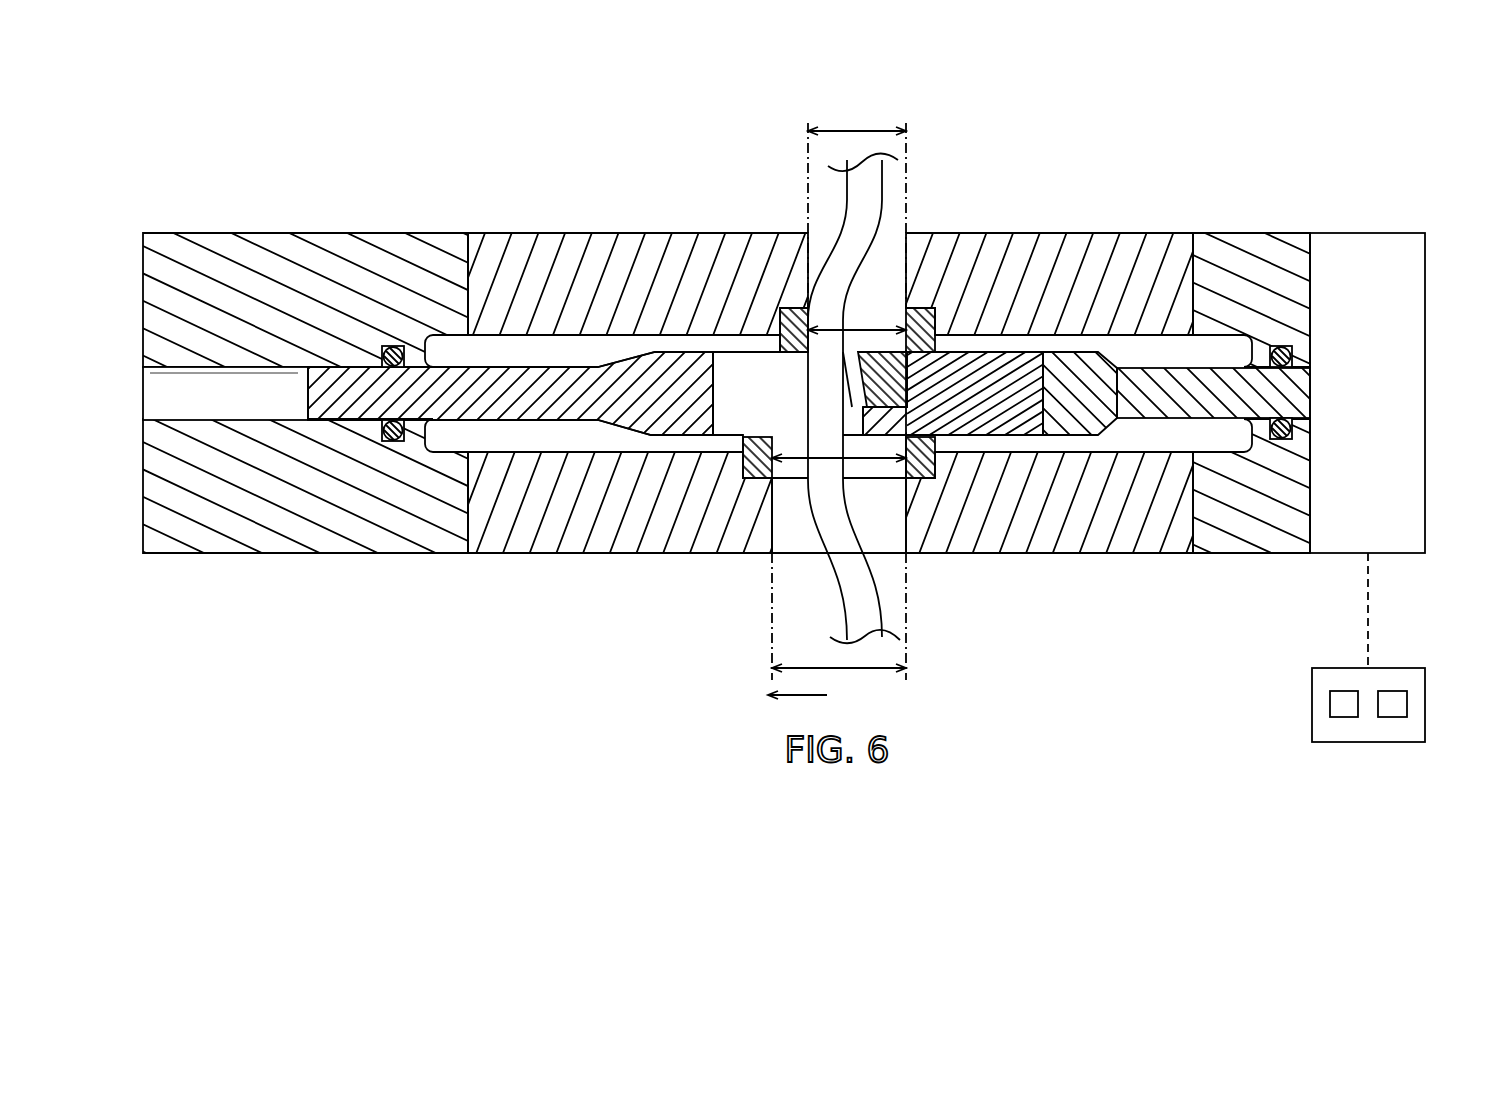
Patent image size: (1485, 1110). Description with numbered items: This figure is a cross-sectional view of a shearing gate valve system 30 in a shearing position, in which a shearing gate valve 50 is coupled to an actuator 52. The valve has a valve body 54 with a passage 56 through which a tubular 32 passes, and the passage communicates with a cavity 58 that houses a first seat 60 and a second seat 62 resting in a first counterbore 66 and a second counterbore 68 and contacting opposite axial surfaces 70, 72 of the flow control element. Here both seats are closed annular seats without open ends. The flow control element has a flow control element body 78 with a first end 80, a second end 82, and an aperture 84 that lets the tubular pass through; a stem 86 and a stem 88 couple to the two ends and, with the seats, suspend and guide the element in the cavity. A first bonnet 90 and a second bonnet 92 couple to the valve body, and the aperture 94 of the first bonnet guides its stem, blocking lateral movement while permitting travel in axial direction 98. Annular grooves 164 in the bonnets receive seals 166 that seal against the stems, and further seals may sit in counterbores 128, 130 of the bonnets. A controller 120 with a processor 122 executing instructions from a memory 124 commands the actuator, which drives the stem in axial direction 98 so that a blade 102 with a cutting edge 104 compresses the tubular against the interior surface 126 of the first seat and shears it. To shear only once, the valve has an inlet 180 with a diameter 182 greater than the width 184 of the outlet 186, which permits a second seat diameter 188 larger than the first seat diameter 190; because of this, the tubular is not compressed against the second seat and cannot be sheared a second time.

The shearing gate valve system 30 is at (605, 690).
The tubular 32 is at (855, 585).
The shearing gate valve 50 is at (1055, 690).
The actuator 52 is at (1370, 240).
The valve body 54 is at (580, 537).
The passage 56 is at (770, 548).
The cavity 58 is at (540, 443).
The first seat 60 is at (780, 308).
The second seat 62 is at (937, 436).
The first counterbore 66 is at (906, 305).
The second counterbore 68 is at (920, 482).
The axial surface 70 is at (937, 352).
The axial surface 72 is at (885, 378).
The flow control element body 78 is at (600, 387).
The first end 80 is at (522, 343).
The second end 82 is at (1086, 452).
The aperture 84 is at (737, 400).
The stem 86 is at (357, 390).
The stem 88 is at (1067, 383).
The first bonnet 90 is at (250, 530).
The second bonnet 92 is at (1237, 240).
The aperture 94 is at (208, 407).
The axial direction 98 is at (800, 697).
The blade 102 is at (1093, 452).
The cutting edge 104 is at (840, 377).
The controller 120 is at (1312, 707).
The processor 122 is at (1342, 718).
The memory 124 is at (1395, 718).
The interior surface 126 is at (800, 308).
The counterbore 128 is at (428, 342).
The counterbore 130 is at (1240, 437).
The annular groove 164 is at (383, 337).
The seal 166 is at (388, 442).
The inlet 180 is at (908, 557).
The diameter 182 is at (840, 672).
The width 184 is at (855, 128).
The outlet 186 is at (892, 250).
The diameter 188 is at (800, 460).
The diameter 190 is at (868, 318).